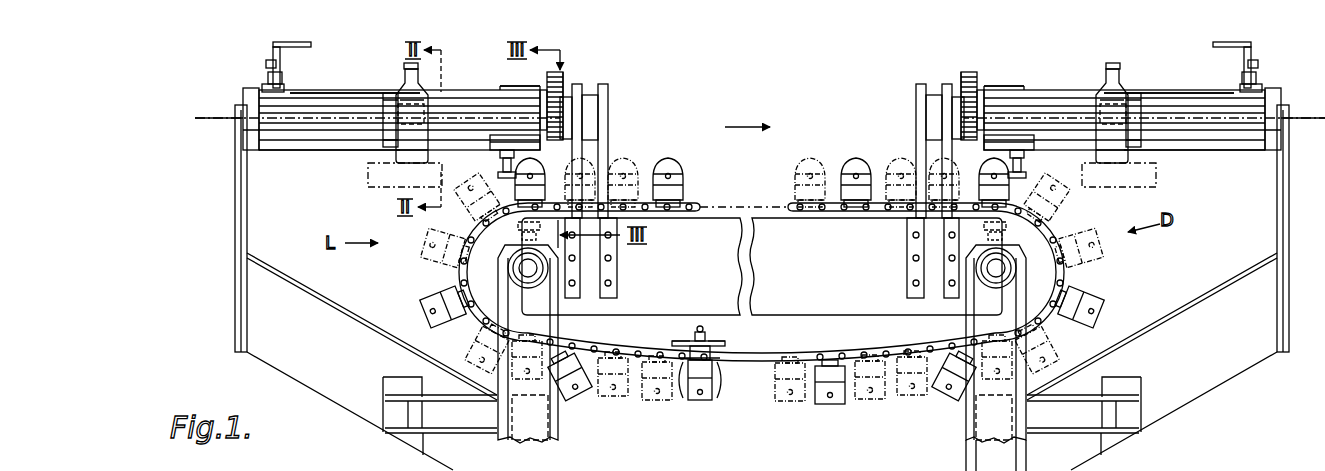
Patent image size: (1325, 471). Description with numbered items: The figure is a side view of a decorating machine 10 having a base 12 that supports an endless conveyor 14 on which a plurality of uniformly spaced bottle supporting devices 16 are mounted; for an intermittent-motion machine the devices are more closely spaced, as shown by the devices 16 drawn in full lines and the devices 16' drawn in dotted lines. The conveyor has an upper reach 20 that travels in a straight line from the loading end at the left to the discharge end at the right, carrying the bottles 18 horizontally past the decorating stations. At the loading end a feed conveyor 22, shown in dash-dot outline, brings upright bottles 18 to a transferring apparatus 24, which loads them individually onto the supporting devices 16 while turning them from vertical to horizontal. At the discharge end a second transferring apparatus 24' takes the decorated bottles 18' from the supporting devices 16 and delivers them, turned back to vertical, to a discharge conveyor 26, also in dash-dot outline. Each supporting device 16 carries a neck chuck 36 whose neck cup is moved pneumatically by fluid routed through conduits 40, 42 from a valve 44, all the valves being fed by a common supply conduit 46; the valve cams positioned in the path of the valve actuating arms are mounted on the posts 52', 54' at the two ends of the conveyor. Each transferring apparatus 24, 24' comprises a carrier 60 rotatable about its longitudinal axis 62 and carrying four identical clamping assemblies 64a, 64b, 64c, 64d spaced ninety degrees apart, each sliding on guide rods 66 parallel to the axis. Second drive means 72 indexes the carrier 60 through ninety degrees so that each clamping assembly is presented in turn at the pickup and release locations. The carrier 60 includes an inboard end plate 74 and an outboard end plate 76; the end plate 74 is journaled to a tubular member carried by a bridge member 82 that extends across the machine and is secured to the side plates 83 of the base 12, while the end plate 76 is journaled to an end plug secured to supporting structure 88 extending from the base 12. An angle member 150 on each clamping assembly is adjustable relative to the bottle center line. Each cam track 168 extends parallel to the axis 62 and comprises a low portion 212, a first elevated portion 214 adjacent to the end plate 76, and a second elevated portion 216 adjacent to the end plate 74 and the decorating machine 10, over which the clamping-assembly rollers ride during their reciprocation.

The decorating machine 10 is at (822, 100).
The base 12 is at (950, 450).
The endless conveyor 14 is at (842, 354).
The bottle supporting devices 16 is at (762, 282).
The bottle supporting devices 16' is at (748, 279).
The bottles 18 is at (547, 105).
The decorated bottles 18' is at (986, 102).
The upper reach 20 is at (792, 158).
The feed conveyor 22 is at (393, 188).
The transferring apparatus 24 is at (323, 170).
The second transferring apparatus 24' is at (1194, 168).
The discharge conveyor 26 is at (1117, 190).
The neck chuck 36 is at (700, 401).
The conduit 40 is at (704, 302).
The conduit 42 is at (680, 400).
The valve 44 is at (683, 340).
The supply conduit 46 is at (718, 342).
The sprocket post 52' is at (528, 332).
The sprocket post 54' is at (996, 346).
The carrier 60 is at (315, 156).
The longitudinal axis 62 is at (215, 116).
The clamping assembly 64a is at (365, 140).
The clamping assembly 64b is at (256, 86).
The clamping assembly 64c is at (1147, 147).
The clamping assembly 64d is at (497, 158).
The guide rods 66 is at (348, 130).
The second drive means 72 is at (565, 80).
The end plate 74 is at (548, 92).
The end plate 76 is at (250, 137).
The bridge member 82 is at (609, 102).
The side plates 83 is at (799, 254).
The supporting structure 88 is at (233, 262).
The angle member 150 is at (592, 468).
The cam track 168 is at (369, 90).
The low portion 212 is at (450, 90).
The first elevated portion 214 is at (322, 88).
The second elevated portion 216 is at (500, 86).